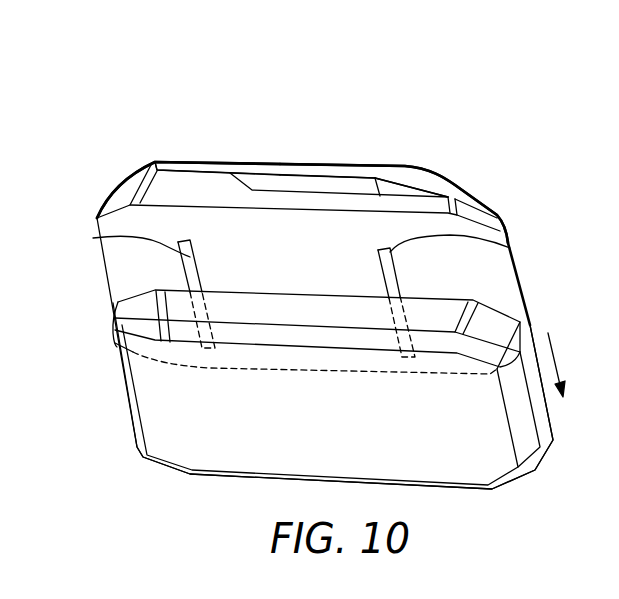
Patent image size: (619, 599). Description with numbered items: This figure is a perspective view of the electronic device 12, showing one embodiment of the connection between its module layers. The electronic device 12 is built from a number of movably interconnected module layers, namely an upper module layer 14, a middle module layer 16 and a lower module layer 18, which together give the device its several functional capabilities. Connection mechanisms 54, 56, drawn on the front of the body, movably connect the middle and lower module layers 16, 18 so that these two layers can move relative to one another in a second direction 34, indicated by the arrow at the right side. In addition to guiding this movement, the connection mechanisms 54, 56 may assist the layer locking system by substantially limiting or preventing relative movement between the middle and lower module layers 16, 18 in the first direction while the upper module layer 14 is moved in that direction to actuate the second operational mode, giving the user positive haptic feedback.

The electronic device 12 is at (212, 72).
The upper module layer 14 is at (433, 180).
The middle module layer 16 is at (128, 182).
The lower module layer 18 is at (170, 460).
The second direction 34 is at (556, 348).
The connection mechanism 54 is at (103, 240).
The connection mechanism 56 is at (508, 250).